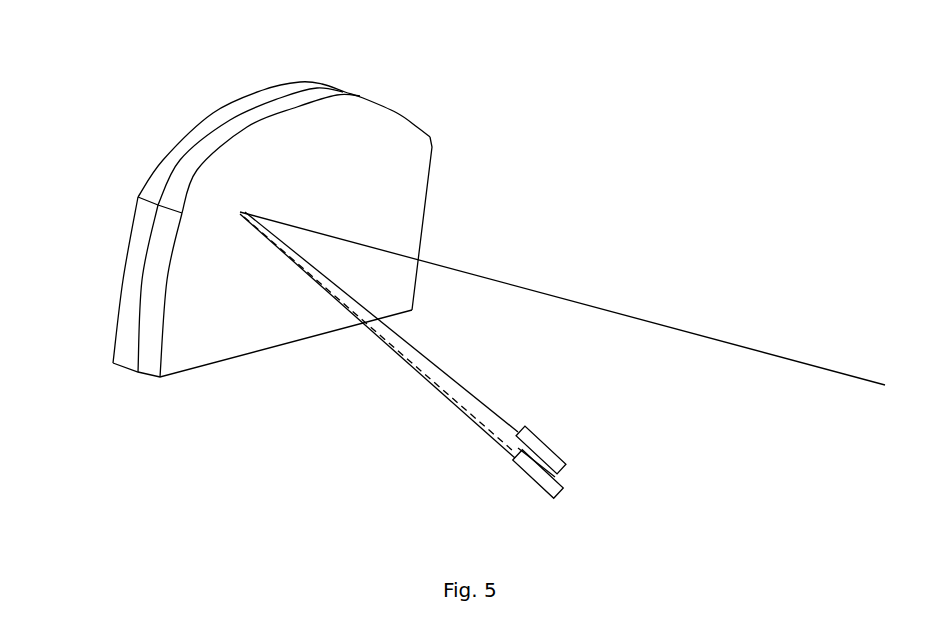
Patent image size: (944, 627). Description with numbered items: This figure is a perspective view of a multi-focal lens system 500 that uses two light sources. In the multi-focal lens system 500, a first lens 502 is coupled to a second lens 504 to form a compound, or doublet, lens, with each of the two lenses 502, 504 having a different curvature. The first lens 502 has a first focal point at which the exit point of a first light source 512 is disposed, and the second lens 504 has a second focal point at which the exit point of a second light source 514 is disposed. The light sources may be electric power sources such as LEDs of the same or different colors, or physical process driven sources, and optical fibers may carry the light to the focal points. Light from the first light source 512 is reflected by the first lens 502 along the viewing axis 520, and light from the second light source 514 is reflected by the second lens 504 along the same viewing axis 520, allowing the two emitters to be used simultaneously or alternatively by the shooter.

The multi-focal lens system 500 is at (335, 87).
The first lens 502 is at (143, 255).
The second lens 504 is at (415, 170).
The first light source 512 is at (568, 492).
The second light source 514 is at (557, 452).
The viewing axis 520 is at (632, 317).